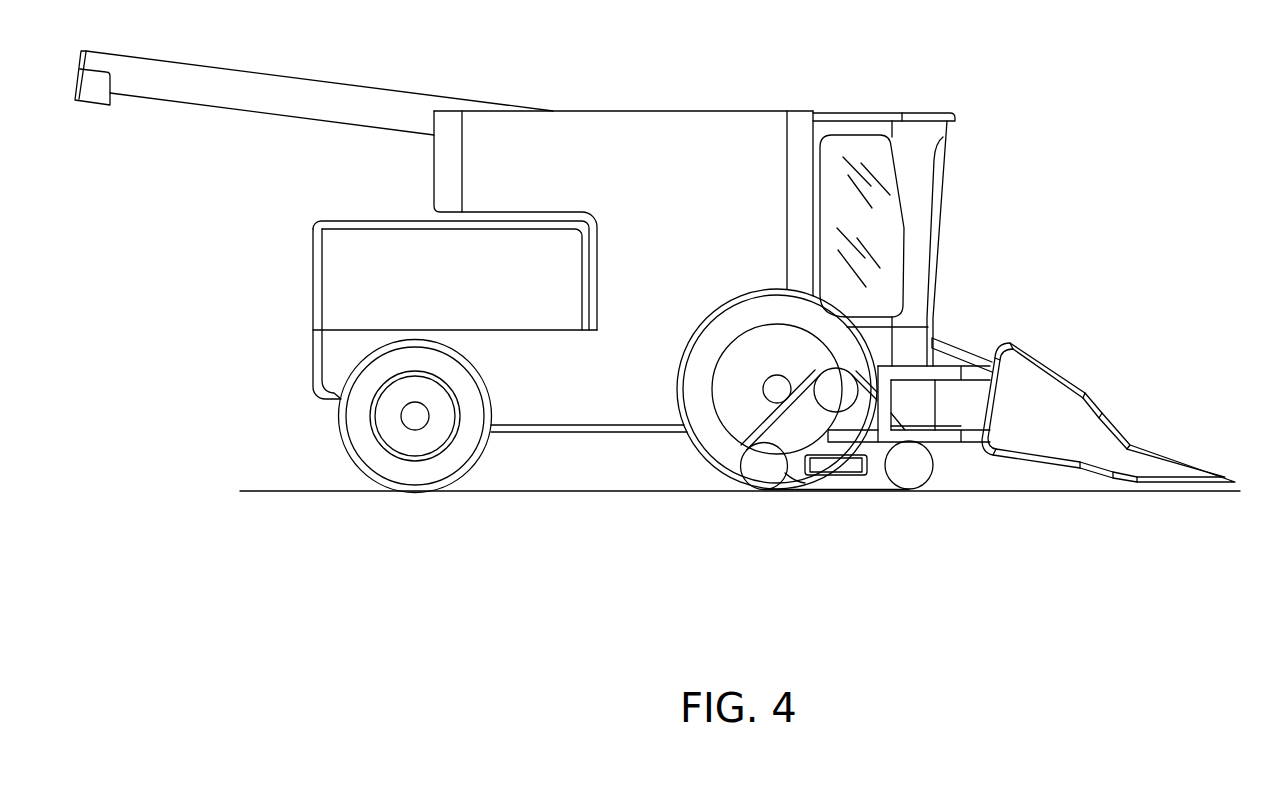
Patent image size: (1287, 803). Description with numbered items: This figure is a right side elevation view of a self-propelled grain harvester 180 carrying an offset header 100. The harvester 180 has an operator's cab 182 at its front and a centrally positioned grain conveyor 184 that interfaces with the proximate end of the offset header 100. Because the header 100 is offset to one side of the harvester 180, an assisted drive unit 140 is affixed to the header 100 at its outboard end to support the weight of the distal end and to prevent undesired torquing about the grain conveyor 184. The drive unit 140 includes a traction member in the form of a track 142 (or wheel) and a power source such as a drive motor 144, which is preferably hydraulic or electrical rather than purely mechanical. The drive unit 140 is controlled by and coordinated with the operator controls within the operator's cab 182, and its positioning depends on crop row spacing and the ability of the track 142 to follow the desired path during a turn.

The header 100 is at (1076, 369).
The assisted drive unit 140 is at (945, 440).
The track 142 is at (733, 422).
The drive motor 144 is at (803, 452).
The harvester 180 is at (708, 103).
The operator's cab 182 is at (943, 162).
The grain conveyor 184 is at (958, 345).